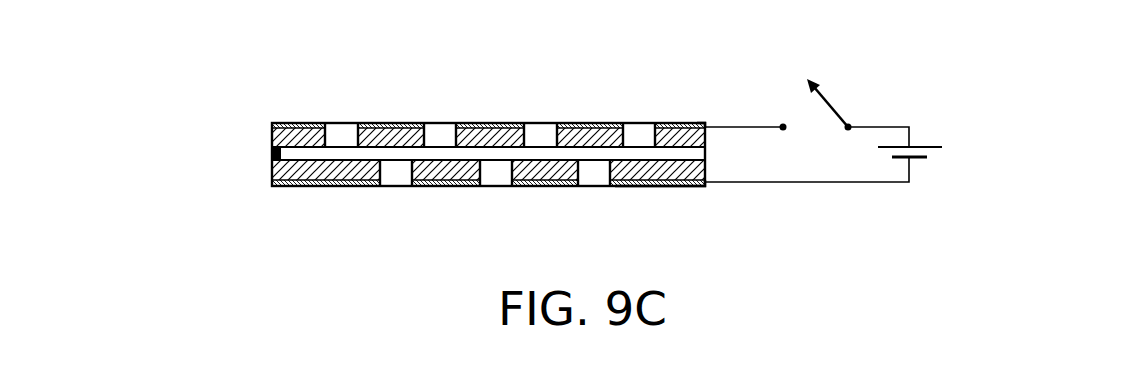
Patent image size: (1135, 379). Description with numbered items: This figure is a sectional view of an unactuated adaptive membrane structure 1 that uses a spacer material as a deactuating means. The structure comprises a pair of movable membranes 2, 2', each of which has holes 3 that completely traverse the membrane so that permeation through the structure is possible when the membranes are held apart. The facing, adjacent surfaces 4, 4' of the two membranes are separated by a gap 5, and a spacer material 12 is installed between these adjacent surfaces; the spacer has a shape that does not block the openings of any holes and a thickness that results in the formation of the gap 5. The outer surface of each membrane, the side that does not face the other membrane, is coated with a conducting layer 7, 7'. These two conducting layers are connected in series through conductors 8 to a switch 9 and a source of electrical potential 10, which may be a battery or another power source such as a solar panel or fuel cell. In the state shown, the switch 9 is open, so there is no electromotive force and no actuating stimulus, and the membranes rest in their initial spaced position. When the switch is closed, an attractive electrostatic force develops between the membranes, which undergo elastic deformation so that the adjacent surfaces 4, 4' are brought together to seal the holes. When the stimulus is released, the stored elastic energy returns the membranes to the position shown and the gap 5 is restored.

The ultracapacitor device 1 is at (343, 66).
The membrane 2 is at (468, 112).
The membrane 2' is at (470, 200).
The holes 3 is at (642, 137).
The adjacent surface 4 is at (488, 119).
The adjacent surface 4' is at (488, 184).
The gap 5 is at (427, 155).
The conducting layer 7 is at (717, 107).
The conducting layer 7' is at (660, 201).
The conductor 8 is at (740, 126).
The switch 9 is at (823, 92).
The source of electrical potential 10 is at (935, 142).
The spacer material 12 is at (272, 153).